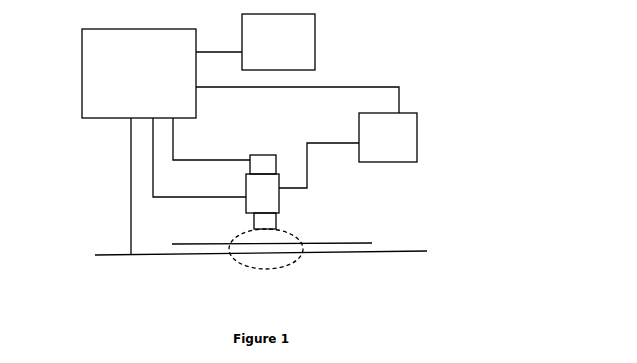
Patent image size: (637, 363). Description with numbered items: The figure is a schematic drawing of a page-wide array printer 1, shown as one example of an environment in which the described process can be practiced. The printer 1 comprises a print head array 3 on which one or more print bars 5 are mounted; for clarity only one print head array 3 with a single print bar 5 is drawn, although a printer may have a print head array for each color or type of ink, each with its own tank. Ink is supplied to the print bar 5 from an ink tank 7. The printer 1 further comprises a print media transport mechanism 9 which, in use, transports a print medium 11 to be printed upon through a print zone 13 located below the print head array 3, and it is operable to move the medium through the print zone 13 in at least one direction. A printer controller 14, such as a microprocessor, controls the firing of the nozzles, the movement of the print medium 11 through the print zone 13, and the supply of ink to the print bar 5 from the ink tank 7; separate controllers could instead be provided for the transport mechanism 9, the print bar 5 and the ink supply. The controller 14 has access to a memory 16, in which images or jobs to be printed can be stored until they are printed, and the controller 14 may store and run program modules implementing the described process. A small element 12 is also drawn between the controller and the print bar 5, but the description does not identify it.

The page-wide array printer 1 is at (437, 77).
The print head array 3 is at (216, 165).
The print bar 5 is at (253, 230).
The ink tank 7 is at (306, 137).
The print media transport mechanism 9 is at (147, 257).
The print medium 11 is at (188, 245).
The sensor 12 is at (265, 155).
The print zone 13 is at (277, 268).
The printer controller 14 is at (139, 73).
The memory 16 is at (255, 42).